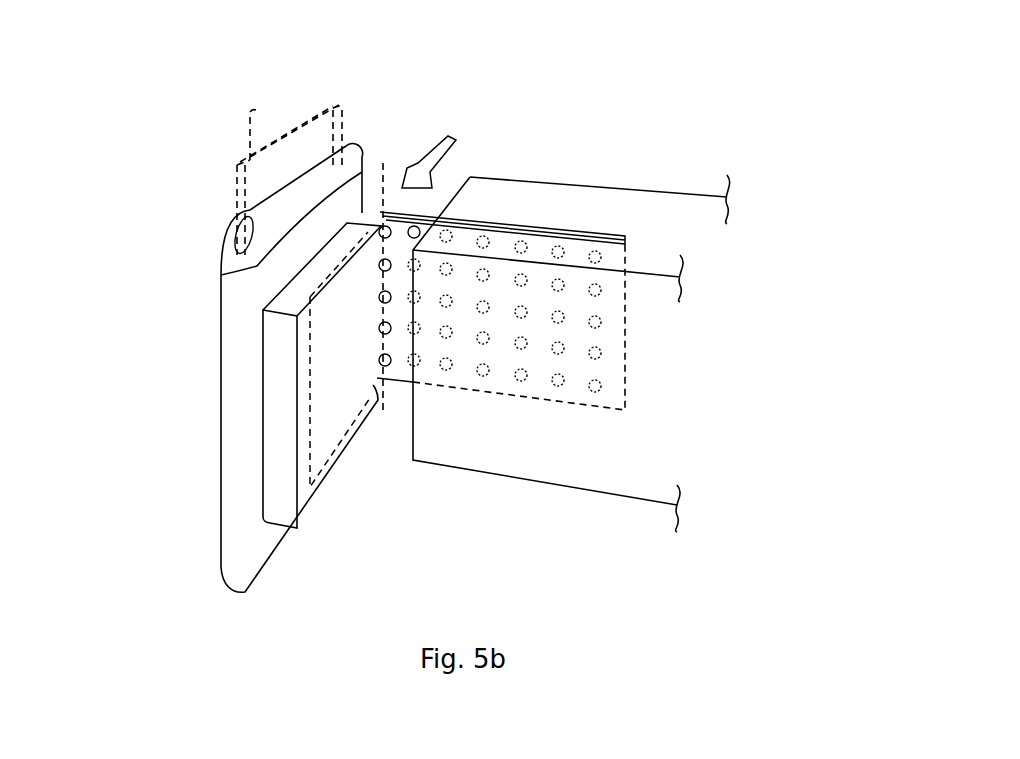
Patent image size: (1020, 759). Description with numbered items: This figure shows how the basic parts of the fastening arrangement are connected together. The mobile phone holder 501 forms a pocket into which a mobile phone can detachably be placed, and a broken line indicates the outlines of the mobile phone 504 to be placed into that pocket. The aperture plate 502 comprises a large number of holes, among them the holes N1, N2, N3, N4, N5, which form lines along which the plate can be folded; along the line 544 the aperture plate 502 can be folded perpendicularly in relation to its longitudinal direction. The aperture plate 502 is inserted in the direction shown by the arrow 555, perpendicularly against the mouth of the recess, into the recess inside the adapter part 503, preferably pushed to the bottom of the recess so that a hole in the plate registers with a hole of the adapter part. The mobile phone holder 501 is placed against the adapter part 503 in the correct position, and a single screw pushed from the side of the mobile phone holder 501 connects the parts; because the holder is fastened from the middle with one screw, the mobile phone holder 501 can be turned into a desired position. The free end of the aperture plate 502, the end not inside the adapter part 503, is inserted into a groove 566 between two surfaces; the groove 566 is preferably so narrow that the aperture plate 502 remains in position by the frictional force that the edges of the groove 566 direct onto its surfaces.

The mobile phone holder 501 is at (224, 399).
The aperture plate 502 is at (503, 397).
The adapter part 503 is at (282, 299).
The mobile phone 504 is at (283, 130).
The line 544 is at (391, 294).
The arrow 555 is at (450, 136).
The groove 566 is at (438, 214).
The hole N1 is at (596, 258).
The hole N2 is at (596, 290).
The hole N3 is at (596, 322).
The hole N4 is at (596, 353).
The hole N5 is at (596, 386).